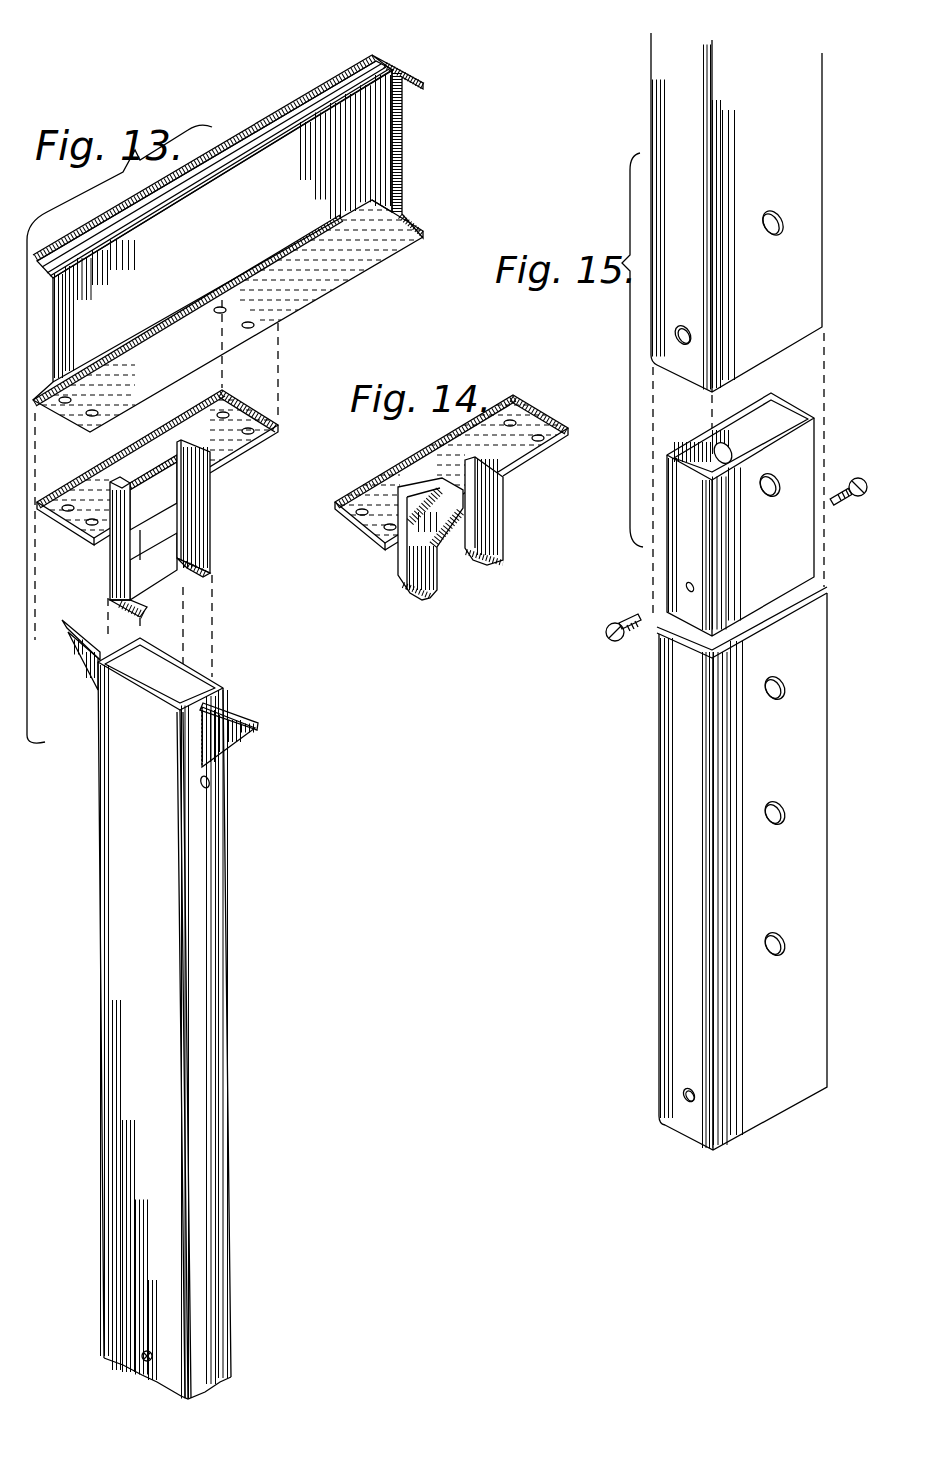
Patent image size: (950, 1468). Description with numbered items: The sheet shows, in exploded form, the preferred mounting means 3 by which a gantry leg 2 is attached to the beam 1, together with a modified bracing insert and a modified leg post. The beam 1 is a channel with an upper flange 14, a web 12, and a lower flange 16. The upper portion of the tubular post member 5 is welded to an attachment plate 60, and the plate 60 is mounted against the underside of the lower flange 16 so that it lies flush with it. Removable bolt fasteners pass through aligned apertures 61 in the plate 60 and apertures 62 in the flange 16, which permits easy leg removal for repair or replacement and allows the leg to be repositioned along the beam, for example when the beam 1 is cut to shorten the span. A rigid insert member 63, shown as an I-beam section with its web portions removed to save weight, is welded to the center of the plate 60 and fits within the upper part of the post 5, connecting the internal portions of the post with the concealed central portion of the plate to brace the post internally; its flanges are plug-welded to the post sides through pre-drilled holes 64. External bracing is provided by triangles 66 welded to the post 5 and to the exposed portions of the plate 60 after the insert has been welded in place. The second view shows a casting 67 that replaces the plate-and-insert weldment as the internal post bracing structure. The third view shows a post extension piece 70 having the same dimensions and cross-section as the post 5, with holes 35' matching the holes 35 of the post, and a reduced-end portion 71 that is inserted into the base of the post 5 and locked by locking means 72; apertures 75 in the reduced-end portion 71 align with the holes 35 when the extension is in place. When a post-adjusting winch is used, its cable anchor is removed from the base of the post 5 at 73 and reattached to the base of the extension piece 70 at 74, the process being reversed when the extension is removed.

In FIG. 13, the beam 1 is at (261, 122).
In FIG. 13, the upper flange 14 is at (410, 76).
In FIG. 13, the web 12 is at (402, 148).
In FIG. 13, the lower flange 16 is at (420, 222).
In FIG. 13, the apertures 62 is at (65, 403).
In FIG. 13, the attachment plate 60 is at (305, 418).
In FIG. 13, the apertures 61 is at (68, 511).
In FIG. 13, the mounting means 3 is at (222, 479).
In FIG. 13, the rigid insert member 63 is at (236, 548).
In FIG. 13, the triangles 66 is at (77, 623).
In FIG. 13, the holes 64 is at (211, 783).
In FIG. 13, the leg 2 is at (236, 884).
In FIG. 13, the tubular post member 5 is at (229, 981).
In FIG. 15, the tubular post member 5 is at (840, 127).
In FIG. 13, the holes 35 is at (161, 1341).
In FIG. 15, the holes 35 is at (776, 175).
In FIG. 14, the casting 67 is at (513, 394).
In FIG. 15, the cable anchor attachment point 73 is at (677, 337).
In FIG. 15, the apertures 75 is at (729, 451).
In FIG. 15, the reduced-end portion 71 is at (803, 448).
In FIG. 15, the locking means 72 is at (846, 508).
In FIG. 15, the holes 35' is at (789, 816).
In FIG. 15, the post extension piece 70 is at (675, 903).
In FIG. 15, the cable anchor attachment point 74 is at (683, 1094).